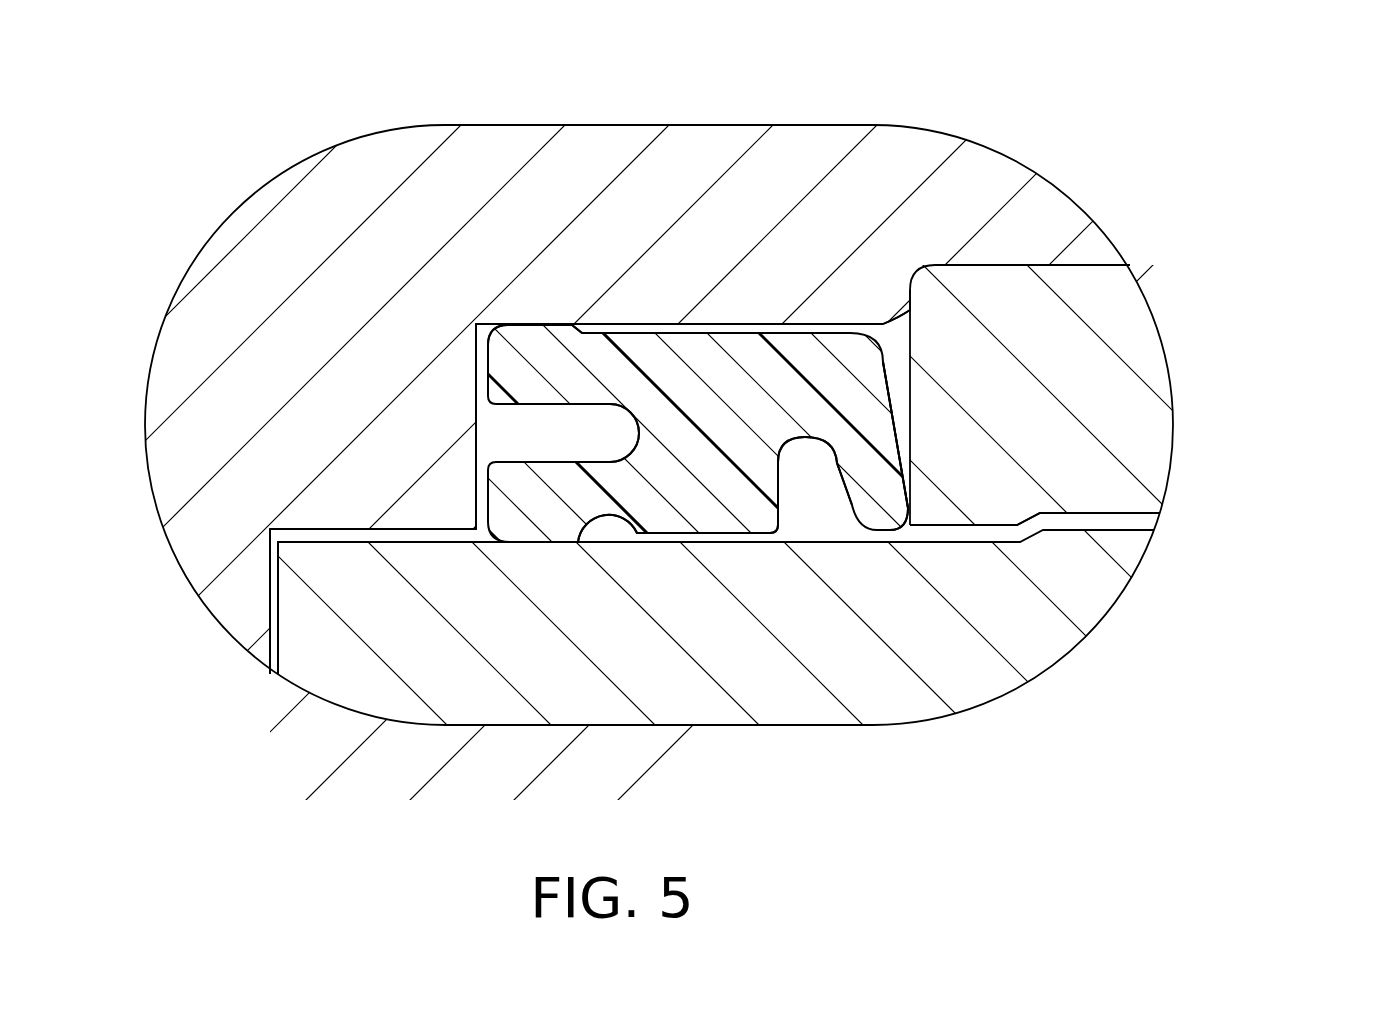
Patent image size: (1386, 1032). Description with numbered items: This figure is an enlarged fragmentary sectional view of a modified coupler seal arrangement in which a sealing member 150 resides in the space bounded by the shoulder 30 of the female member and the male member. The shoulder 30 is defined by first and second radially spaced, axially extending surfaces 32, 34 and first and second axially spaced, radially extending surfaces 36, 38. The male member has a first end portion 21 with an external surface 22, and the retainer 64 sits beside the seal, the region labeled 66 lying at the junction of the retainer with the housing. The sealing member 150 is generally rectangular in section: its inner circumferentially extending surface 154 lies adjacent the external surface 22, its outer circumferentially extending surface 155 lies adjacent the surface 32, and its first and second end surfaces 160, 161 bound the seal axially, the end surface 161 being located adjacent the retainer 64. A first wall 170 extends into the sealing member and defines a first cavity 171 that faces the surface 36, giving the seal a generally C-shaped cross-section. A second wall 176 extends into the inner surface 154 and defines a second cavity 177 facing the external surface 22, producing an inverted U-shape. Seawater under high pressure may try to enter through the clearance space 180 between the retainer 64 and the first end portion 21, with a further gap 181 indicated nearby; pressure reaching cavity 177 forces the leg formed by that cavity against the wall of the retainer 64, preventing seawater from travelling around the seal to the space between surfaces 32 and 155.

The first end portion 21 is at (723, 688).
The external surface 22 is at (587, 528).
The shoulder 30 is at (352, 444).
The first axially extending surface 32 is at (705, 332).
The second axially extending surface 34 is at (403, 530).
The first radially extending surface 36 is at (473, 367).
The second radially extending surface 38 is at (272, 552).
The retainer 64 is at (1078, 332).
The groove wall recess 66 is at (883, 322).
The sealing member 150 is at (540, 357).
The inner circumferentially extending surface 154 is at (648, 520).
The outer circumferentially extending surface 155 is at (605, 332).
The first end surface 160 is at (517, 403).
The second end surface 161 is at (895, 429).
The first wall 170 is at (540, 410).
The first cavity 171 is at (553, 441).
The second wall 176 is at (792, 512).
The second cavity 177 is at (818, 517).
The space 180 is at (963, 533).
The gap 181 is at (872, 468).